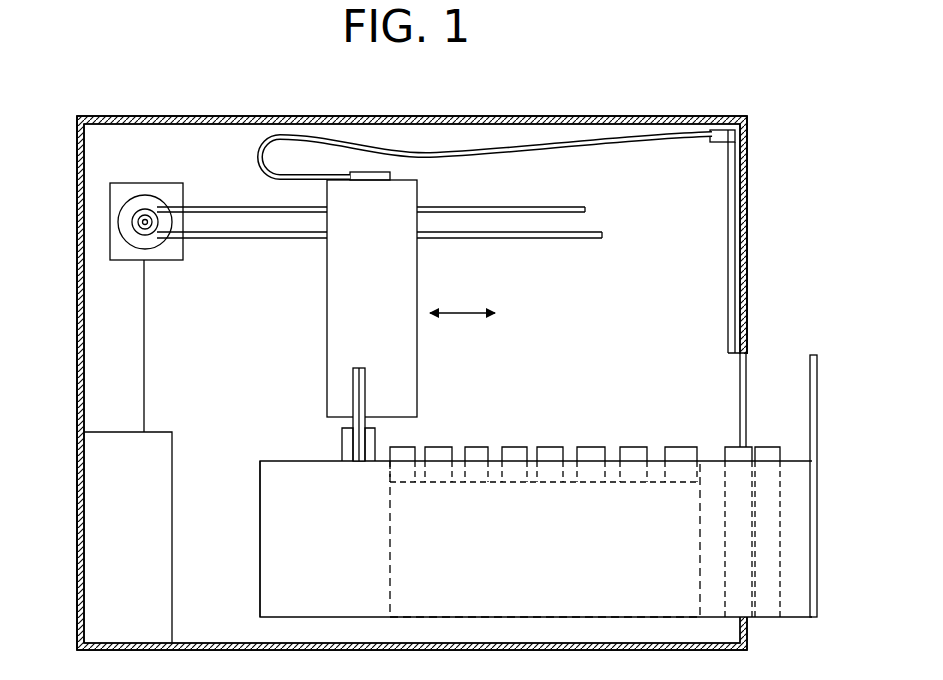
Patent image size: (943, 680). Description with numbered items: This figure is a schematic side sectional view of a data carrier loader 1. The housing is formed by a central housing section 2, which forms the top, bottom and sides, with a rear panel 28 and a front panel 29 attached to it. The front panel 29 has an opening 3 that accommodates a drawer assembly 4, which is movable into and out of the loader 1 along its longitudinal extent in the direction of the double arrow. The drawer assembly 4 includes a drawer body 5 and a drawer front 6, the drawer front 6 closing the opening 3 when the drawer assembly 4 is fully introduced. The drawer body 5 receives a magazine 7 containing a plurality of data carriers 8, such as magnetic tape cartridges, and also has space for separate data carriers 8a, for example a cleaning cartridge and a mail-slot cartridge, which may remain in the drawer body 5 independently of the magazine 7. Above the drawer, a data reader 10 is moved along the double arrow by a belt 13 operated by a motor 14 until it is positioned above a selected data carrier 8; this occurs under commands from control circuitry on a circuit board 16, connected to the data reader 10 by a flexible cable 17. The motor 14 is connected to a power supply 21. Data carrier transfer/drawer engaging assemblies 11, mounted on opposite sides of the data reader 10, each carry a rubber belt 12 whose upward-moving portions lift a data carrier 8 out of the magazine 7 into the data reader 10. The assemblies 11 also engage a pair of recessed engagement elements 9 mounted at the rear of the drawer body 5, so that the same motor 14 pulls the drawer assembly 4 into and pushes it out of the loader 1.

The loader 1 is at (272, 113).
The central housing section 2 is at (412, 118).
The opening 3 is at (745, 385).
The drawer assembly 4 is at (255, 527).
The drawer body 5 is at (277, 588).
The drawer front 6 is at (817, 392).
The magazine 7 is at (395, 535).
The data carriers 8 is at (546, 447).
The separate data carriers 8a is at (768, 447).
The engagement elements 9 is at (342, 440).
The data reader 10 is at (400, 271).
The data carrier transfer/drawer engaging assemblies 11 is at (367, 389).
The rubber belt 12 is at (355, 385).
The belt 13 is at (215, 207).
The motor 14 is at (145, 197).
The circuit board 16 is at (728, 197).
The flexible cable 17 is at (523, 156).
The power supply 21 is at (155, 442).
The rear panel 28 is at (77, 148).
The front panel 29 is at (746, 158).